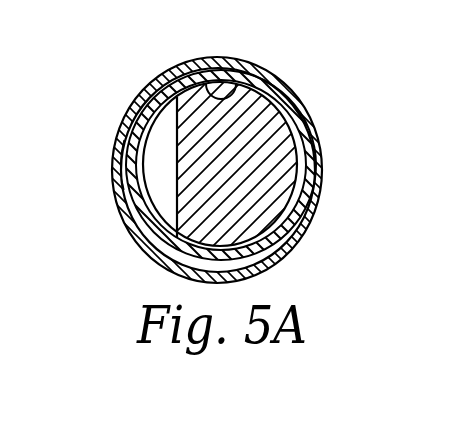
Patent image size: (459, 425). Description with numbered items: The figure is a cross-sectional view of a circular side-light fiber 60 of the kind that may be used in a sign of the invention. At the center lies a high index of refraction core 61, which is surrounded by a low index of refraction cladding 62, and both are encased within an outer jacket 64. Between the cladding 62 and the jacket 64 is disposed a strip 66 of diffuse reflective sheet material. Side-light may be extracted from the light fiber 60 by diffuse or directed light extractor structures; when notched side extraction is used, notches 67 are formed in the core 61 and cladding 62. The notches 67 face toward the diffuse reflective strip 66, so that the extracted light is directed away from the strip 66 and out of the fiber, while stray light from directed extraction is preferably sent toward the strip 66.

The side-light fiber 60 is at (214, 146).
The high index of refraction core 61 is at (267, 200).
The low index of refraction cladding 62 is at (313, 125).
The jacket 64 is at (317, 157).
The strip of diffuse reflective sheet material 66 is at (245, 93).
The notches 67 is at (149, 163).